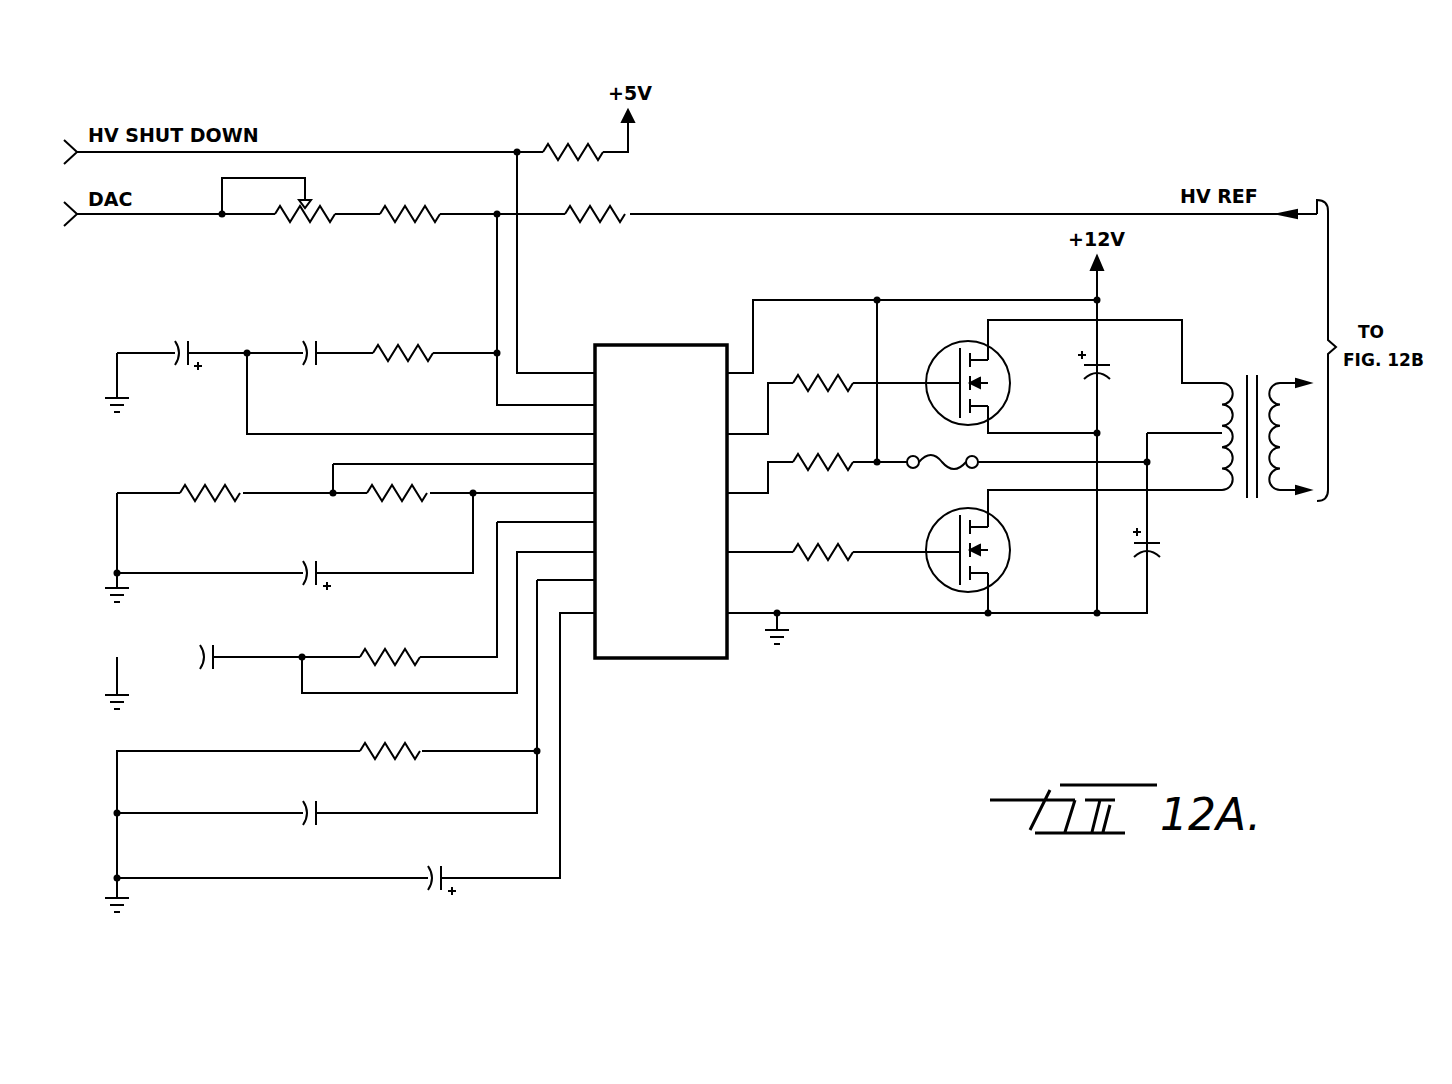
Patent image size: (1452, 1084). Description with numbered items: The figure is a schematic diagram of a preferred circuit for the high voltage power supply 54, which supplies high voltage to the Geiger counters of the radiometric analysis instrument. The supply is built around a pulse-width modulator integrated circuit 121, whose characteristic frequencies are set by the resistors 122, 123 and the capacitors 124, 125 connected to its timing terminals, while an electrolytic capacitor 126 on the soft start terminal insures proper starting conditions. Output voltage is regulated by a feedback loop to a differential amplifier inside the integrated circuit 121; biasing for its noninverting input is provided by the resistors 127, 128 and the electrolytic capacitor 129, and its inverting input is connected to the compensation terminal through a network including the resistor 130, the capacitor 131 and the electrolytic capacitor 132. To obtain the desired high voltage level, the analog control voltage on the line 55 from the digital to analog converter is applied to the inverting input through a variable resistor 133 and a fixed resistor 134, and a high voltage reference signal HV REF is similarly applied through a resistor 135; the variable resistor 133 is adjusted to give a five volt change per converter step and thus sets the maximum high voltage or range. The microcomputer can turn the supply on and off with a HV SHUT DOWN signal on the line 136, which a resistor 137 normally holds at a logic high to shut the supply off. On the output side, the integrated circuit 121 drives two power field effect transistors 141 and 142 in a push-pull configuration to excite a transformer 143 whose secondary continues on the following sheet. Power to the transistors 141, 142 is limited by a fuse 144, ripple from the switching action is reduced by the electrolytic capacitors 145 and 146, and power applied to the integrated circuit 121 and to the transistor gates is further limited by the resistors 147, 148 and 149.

The high voltage power supply 54 is at (885, 680).
The line 55 is at (175, 232).
The integrated circuit 121 is at (664, 660).
The resistor 122 is at (407, 644).
The resistor 123 is at (418, 738).
The capacitor 124 is at (215, 676).
The capacitor 125 is at (325, 808).
The electrolytic capacitor 126 is at (445, 870).
The resistor 127 is at (208, 506).
The resistor 128 is at (398, 506).
The electrolytic capacitor 129 is at (315, 562).
The resistor 130 is at (408, 372).
The capacitor 131 is at (290, 382).
The electrolytic capacitor 132 is at (160, 382).
The variable resistor 133 is at (305, 228).
The fixed resistor 134 is at (410, 228).
The resistor 135 is at (610, 232).
The line 136 is at (152, 155).
The resistor 137 is at (582, 165).
The power field effect transistor 141 is at (1005, 400).
The power field effect transistor 142 is at (1007, 567).
The transformer 143 is at (1260, 505).
The fuse 144 is at (945, 475).
The electrolytic capacitor 145 is at (1105, 388).
The electrolytic capacitor 146 is at (1158, 565).
The resistor 147 is at (807, 480).
The resistor 148 is at (805, 568).
The resistor 149 is at (805, 400).